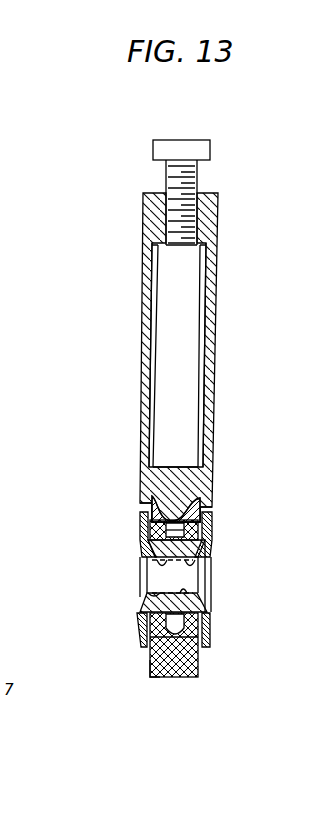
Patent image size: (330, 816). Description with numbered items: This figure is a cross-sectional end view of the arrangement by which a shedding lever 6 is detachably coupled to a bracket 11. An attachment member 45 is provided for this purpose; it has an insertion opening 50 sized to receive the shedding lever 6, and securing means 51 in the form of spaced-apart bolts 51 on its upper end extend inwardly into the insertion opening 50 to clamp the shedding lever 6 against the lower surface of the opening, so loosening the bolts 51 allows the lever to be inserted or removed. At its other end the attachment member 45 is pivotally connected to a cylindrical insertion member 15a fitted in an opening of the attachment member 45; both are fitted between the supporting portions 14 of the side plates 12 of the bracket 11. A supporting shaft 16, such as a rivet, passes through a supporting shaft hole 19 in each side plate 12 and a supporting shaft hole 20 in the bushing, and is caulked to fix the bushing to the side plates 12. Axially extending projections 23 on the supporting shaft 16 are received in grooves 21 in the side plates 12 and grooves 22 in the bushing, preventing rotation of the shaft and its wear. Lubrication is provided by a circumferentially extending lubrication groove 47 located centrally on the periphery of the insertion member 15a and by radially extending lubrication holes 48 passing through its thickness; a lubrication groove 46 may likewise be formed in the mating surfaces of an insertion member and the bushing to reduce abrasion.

The securing means 51 is at (190, 150).
The insertion opening 50 is at (205, 247).
The attachment member 45 is at (143, 245).
The shedding lever 6 is at (185, 372).
The insertion member 15a is at (212, 480).
The projections 23 is at (150, 500).
The side plates 12 is at (141, 523).
The grooves 21 is at (150, 562).
The grooves 22 is at (205, 560).
The bracket 11 is at (219, 576).
The supporting shaft 16 is at (190, 578).
The supporting shaft hole 19 is at (150, 588).
The supporting portions 14 is at (140, 628).
The lubrication groove 46 is at (146, 645).
The supporting shaft hole 20 is at (197, 677).
The lubrication groove 47 is at (168, 670).
The lubrication holes 48 is at (151, 668).